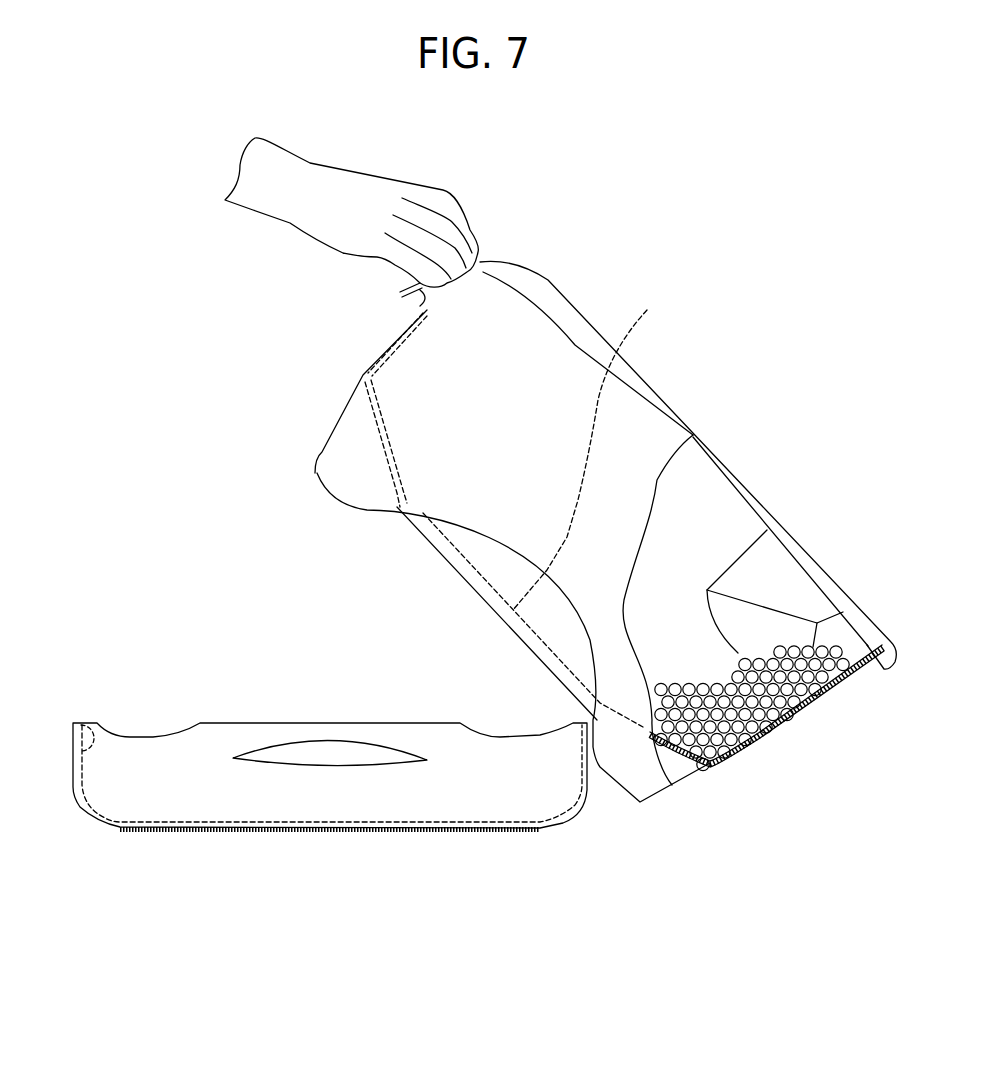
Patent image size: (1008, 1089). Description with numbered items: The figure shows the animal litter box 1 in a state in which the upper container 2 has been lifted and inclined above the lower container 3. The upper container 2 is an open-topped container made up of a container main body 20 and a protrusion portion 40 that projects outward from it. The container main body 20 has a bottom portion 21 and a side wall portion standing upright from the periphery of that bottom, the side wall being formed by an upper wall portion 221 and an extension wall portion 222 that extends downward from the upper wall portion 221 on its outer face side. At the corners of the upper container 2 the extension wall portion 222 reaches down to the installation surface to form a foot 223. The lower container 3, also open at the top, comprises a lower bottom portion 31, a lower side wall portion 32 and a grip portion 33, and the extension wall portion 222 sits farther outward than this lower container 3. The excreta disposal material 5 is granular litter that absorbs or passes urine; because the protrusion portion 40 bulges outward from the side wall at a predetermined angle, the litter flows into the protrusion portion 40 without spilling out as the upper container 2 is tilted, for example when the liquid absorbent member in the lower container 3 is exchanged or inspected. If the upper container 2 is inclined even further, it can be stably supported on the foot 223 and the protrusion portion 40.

The animal litter box 1 is at (697, 233).
The upper container 2 is at (583, 312).
The container main body 20 is at (752, 488).
The bottom portion 21 is at (595, 448).
The upper wall portion 221 is at (447, 317).
The extension wall portion 222 is at (397, 388).
The foot 223 is at (330, 462).
The protrusion portion 40 is at (820, 575).
The excreta disposal material 5 is at (743, 728).
The lower container 3 is at (88, 818).
The lower bottom portion 31 is at (267, 820).
The lower side wall portion 32 is at (87, 722).
The grip portion 33 is at (347, 753).